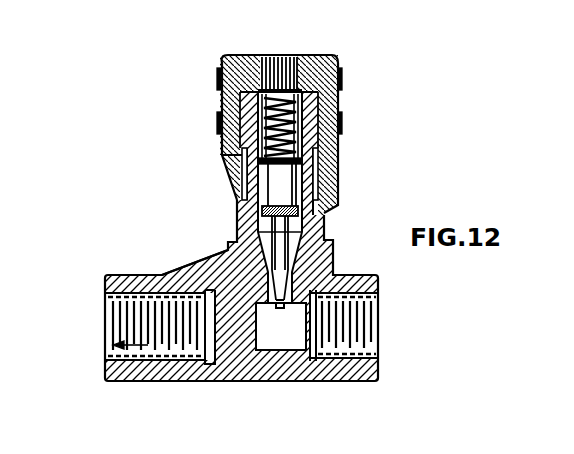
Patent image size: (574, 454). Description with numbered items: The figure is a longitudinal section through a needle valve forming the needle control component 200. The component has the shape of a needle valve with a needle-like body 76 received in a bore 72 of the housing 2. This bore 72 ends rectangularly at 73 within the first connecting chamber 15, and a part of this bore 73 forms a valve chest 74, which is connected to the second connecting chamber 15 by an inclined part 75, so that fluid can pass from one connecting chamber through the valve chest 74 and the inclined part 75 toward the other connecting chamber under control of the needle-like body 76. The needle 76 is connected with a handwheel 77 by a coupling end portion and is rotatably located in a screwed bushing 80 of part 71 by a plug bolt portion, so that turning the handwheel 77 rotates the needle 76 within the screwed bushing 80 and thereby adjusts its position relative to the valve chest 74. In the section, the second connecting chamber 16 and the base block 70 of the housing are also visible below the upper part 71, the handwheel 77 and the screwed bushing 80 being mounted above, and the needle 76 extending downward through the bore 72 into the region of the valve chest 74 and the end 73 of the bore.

The housing 2 is at (297, 366).
The connecting chamber 15 is at (374, 305).
The inlet port 16 is at (115, 312).
The valve body block 70 is at (244, 338).
The part 71 is at (312, 234).
The bore 72 is at (244, 172).
The end of bore 73 is at (283, 307).
The valve chest 74 is at (300, 263).
The inclined part 75 is at (221, 278).
The needle-like body 76 is at (286, 191).
The handwheel 77 is at (314, 58).
The screwed bushing 80 is at (262, 129).
The needle control component 200 is at (116, 240).